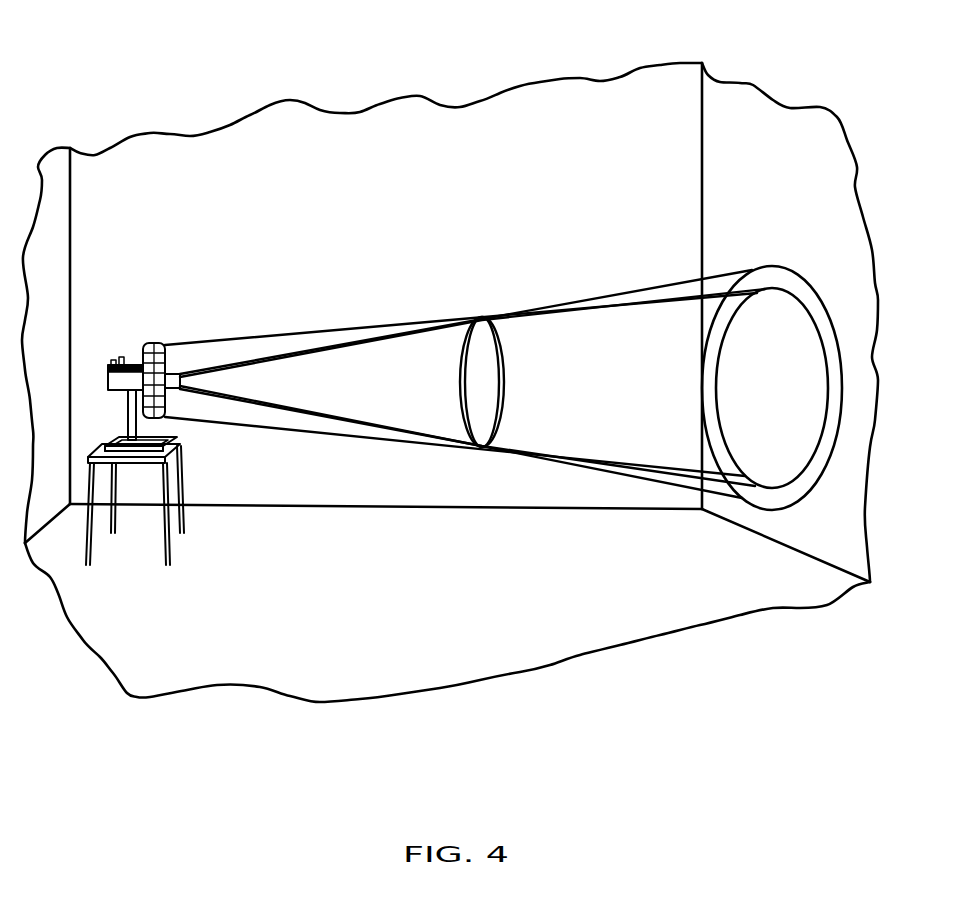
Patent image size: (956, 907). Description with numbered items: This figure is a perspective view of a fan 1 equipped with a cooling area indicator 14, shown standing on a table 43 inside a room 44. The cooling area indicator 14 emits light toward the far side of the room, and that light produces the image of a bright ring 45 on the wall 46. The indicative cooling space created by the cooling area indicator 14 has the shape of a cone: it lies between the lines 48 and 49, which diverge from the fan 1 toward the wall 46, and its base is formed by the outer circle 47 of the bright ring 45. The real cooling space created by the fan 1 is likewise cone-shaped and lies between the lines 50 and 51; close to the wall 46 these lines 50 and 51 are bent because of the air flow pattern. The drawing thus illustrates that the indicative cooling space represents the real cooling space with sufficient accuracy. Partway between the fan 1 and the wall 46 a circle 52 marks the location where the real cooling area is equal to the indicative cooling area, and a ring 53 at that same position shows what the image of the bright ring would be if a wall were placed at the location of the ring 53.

The fan 1 is at (161, 376).
The cooling area indicator 14 is at (178, 372).
The table 43 is at (180, 446).
The room 44 is at (391, 76).
The bright ring 45 is at (780, 278).
The wall 46 is at (749, 108).
The outer circle 47 is at (810, 298).
The line 48 is at (606, 293).
The line 49 is at (567, 465).
The line 50 is at (336, 330).
The line 51 is at (338, 438).
The circle 52 is at (506, 392).
The ring 53 is at (485, 318).